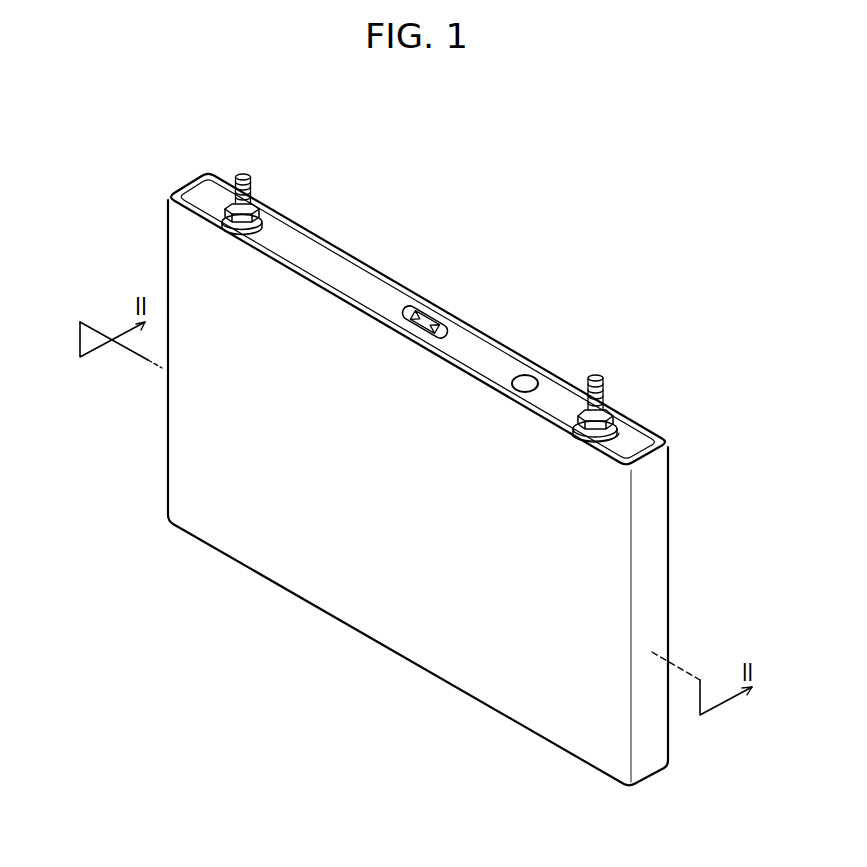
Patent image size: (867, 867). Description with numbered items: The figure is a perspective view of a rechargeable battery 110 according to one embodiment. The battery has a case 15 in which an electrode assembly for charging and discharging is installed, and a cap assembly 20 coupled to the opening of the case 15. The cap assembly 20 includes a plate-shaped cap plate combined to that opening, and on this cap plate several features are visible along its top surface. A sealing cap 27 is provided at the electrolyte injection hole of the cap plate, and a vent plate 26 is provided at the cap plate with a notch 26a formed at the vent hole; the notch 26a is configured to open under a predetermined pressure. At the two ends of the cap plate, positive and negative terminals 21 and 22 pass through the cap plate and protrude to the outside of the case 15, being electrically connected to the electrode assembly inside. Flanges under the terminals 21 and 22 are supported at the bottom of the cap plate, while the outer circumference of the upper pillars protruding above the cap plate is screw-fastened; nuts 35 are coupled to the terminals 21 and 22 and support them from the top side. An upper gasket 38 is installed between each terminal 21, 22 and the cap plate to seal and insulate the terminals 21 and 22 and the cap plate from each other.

The rechargeable battery 110 is at (531, 237).
The case 15 is at (361, 623).
The cap assembly 20 is at (505, 339).
The positive terminal 21 is at (246, 174).
The negative terminal 22 is at (594, 377).
The vent plate 26 is at (429, 313).
The notch 26a is at (444, 326).
The sealing cap 27 is at (525, 374).
The nut 35 is at (609, 401).
The upper gasket 38 is at (622, 428).